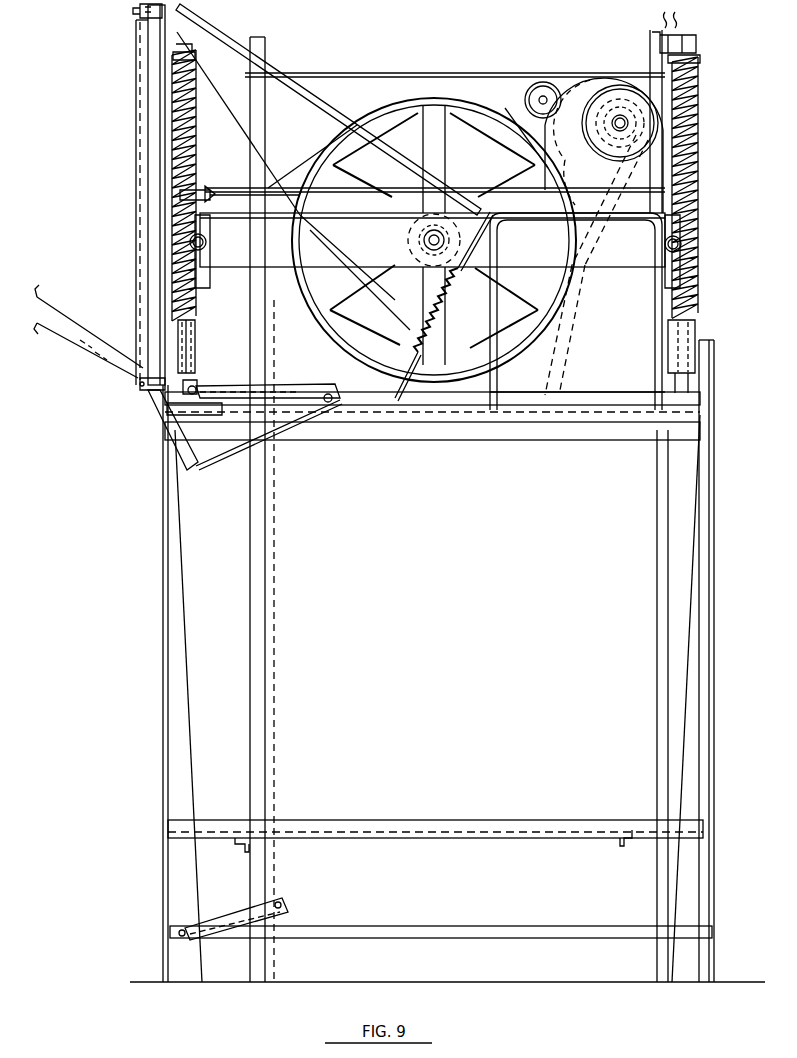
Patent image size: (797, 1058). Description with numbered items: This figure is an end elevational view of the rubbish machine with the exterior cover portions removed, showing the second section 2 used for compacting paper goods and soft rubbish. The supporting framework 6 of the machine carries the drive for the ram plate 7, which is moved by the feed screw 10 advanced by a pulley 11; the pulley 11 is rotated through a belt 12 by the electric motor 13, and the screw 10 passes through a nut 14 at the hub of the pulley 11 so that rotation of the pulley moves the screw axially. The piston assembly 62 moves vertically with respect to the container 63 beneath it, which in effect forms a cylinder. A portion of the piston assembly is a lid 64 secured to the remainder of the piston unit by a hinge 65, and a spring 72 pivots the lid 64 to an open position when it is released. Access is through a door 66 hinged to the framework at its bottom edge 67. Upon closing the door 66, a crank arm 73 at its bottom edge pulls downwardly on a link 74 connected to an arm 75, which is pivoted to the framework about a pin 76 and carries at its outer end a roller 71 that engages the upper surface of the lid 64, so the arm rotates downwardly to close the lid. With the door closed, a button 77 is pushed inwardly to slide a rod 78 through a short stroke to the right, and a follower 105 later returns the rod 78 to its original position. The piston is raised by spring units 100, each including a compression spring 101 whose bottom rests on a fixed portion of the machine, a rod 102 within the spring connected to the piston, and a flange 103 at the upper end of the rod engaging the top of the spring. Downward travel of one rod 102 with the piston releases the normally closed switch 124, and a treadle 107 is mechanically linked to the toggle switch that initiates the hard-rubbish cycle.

The second section 2 is at (128, 160).
The framework 6 is at (600, 258).
The ram plate 7 is at (387, 80).
The feed screw 10 is at (423, 241).
The pulley 11 is at (431, 104).
The belt 12 is at (514, 117).
The electric motor 13 is at (608, 65).
The nut 14 is at (426, 230).
The piston assembly 62 is at (567, 392).
The container 63 is at (473, 635).
The lid 64 is at (407, 316).
The hinge 65 is at (440, 350).
The door 66 is at (140, 247).
The bottom edge 67 is at (138, 382).
The roller 71 is at (197, 386).
The spring 72 is at (474, 274).
The crank arm 73 is at (155, 410).
The link 74 is at (205, 465).
The arm 75 is at (268, 390).
The pin 76 is at (327, 394).
The button 77 is at (133, 12).
The rod 78 is at (490, 190).
The spring units 100 is at (196, 110).
The compression spring 101 is at (692, 250).
The rod 102 is at (692, 221).
The flange 103 is at (170, 56).
The follower 105 is at (215, 190).
The treadle 107 is at (240, 912).
The switch 124 is at (680, 44).